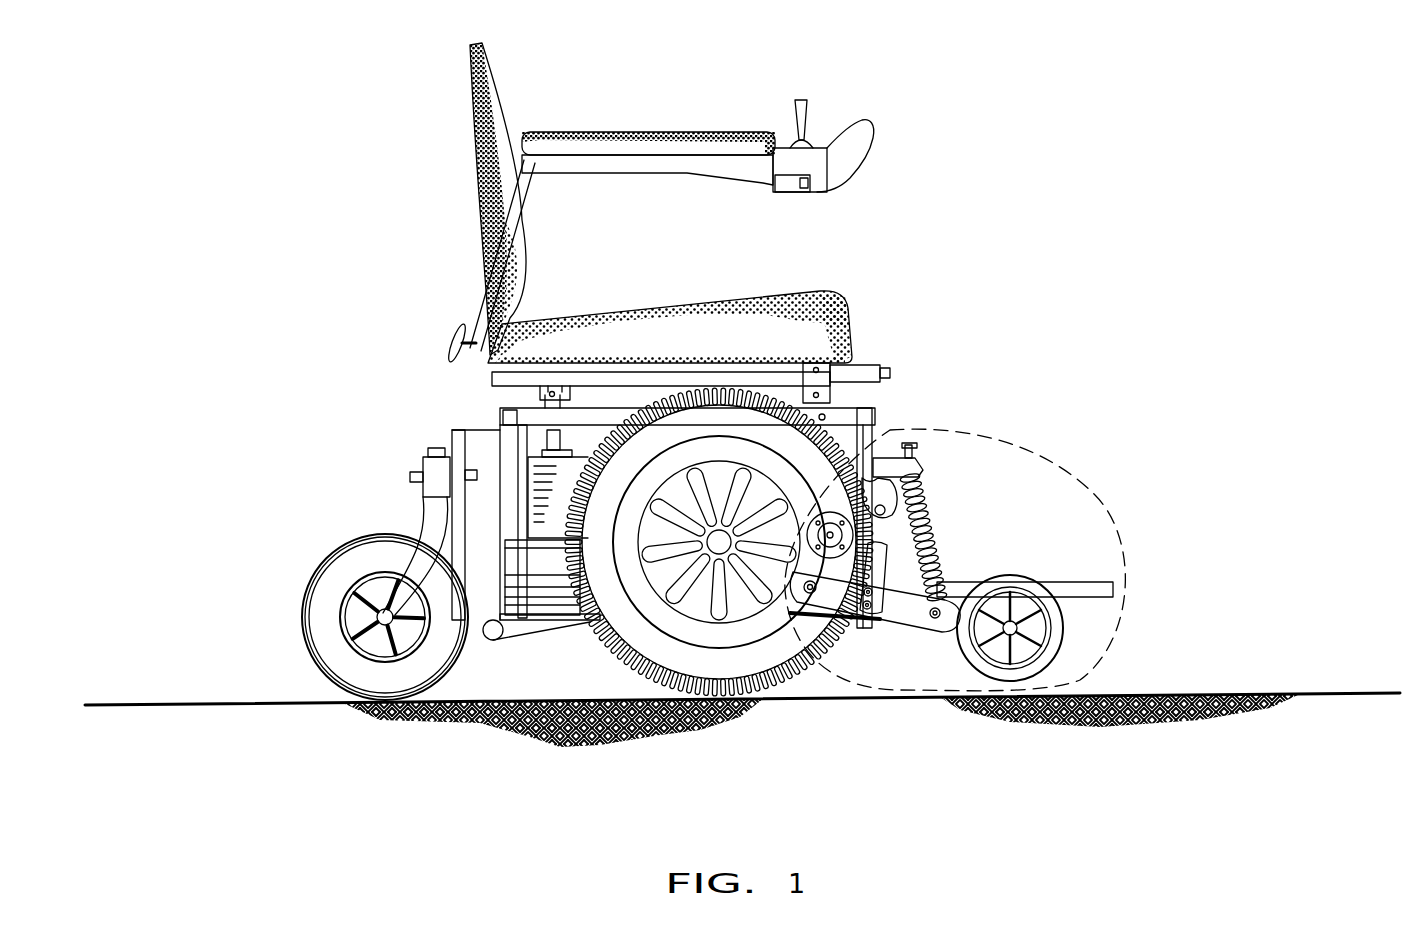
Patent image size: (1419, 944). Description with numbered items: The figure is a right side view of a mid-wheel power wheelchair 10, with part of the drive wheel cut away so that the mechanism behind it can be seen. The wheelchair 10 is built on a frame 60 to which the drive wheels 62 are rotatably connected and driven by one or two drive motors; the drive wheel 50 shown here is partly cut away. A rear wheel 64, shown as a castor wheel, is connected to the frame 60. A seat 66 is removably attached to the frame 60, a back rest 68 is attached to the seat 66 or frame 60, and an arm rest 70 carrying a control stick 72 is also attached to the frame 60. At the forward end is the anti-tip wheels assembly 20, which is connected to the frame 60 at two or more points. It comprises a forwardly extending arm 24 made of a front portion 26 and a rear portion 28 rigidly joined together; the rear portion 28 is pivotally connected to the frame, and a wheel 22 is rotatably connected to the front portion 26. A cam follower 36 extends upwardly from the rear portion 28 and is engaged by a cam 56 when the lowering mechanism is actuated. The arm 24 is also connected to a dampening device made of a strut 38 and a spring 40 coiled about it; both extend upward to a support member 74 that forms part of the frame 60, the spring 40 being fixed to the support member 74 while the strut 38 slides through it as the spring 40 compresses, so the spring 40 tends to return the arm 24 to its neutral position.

The wheelchair 10 is at (337, 80).
The anti-tip wheels assembly 20 is at (1050, 527).
The wheel 22 is at (1073, 646).
The arm 24 is at (913, 630).
The front portion 26 is at (942, 630).
The rear portion 28 is at (887, 607).
The cam follower 36 is at (852, 622).
The strut 38 is at (908, 457).
The spring 40 is at (940, 528).
The drive wheel 50 is at (745, 605).
The cam 56 is at (798, 524).
The frame 60 is at (512, 516).
The drive wheels 62 is at (597, 630).
The rear wheel 64 is at (322, 627).
The seat 66 is at (655, 332).
The back rest 68 is at (490, 135).
The arm rest 70 is at (686, 142).
The control stick 72 is at (807, 108).
The support member 74 is at (881, 449).